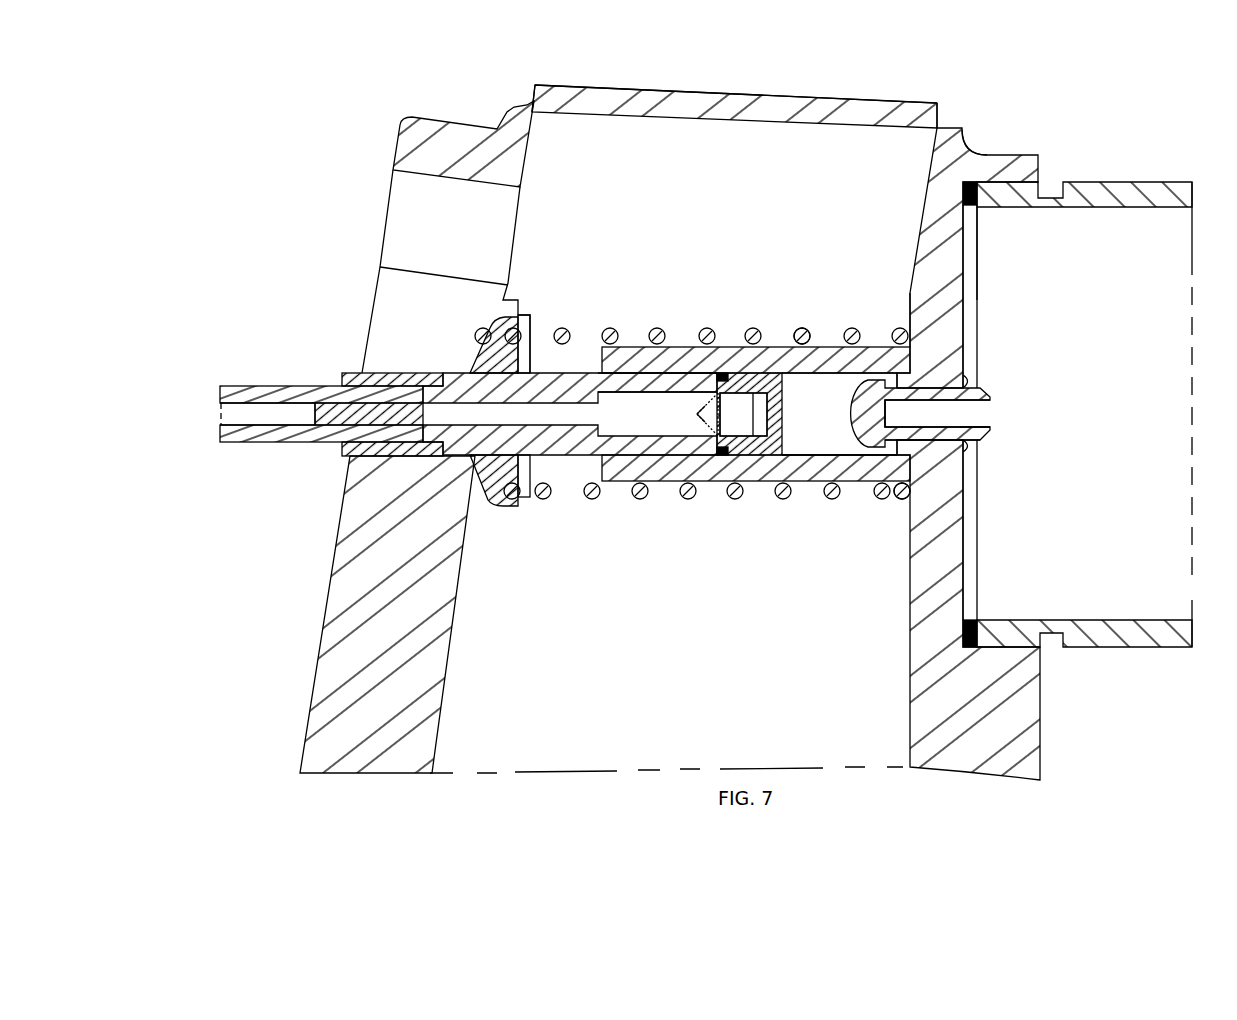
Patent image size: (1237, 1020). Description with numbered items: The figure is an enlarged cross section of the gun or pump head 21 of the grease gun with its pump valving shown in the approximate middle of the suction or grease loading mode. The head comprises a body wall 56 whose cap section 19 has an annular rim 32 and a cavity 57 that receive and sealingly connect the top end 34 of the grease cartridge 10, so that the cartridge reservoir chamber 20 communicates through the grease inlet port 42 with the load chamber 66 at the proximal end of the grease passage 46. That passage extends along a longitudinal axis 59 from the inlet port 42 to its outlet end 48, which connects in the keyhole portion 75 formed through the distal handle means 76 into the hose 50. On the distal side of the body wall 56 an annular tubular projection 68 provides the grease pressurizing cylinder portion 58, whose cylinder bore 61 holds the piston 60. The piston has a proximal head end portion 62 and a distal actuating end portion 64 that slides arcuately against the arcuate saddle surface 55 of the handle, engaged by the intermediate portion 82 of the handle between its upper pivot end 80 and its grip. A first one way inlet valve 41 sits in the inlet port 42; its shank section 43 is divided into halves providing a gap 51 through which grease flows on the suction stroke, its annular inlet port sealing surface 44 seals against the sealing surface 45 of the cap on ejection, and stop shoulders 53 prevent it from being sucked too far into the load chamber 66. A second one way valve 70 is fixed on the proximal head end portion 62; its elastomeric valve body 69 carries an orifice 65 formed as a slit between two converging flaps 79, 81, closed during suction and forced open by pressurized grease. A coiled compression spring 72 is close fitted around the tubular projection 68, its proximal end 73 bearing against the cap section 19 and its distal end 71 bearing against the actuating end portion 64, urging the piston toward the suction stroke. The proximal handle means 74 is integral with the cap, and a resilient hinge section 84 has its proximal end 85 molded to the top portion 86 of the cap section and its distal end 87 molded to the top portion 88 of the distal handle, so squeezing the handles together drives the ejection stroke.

The grease cartridge 10 is at (1138, 179).
The cap section 19 is at (965, 272).
The cartridge reservoir chamber 20 is at (1130, 376).
The gun or pump head 21 is at (648, 86).
The annular rim 32 is at (1040, 170).
The top end of cartridge 34 is at (978, 220).
The first one way inlet valve 41 is at (929, 388).
The grease inlet port 42 is at (975, 410).
The shank section 43 is at (935, 442).
The annular inlet port sealing surface 44 is at (896, 438).
The sealing surface 45 is at (886, 441).
The grease passage 46 is at (453, 410).
The outlet end 48 is at (327, 383).
The hose 50 is at (223, 386).
The gap 51 is at (977, 426).
The stop shoulders 53 is at (968, 376).
The arcuate saddle surface 55 is at (481, 333).
The body wall 56 is at (947, 295).
The cavity 57 is at (1006, 183).
The grease pressurizing cylinder portion 58 is at (875, 347).
The longitudinal axis 59 is at (293, 413).
The piston 60 is at (643, 372).
The cylinder bore 61 is at (807, 449).
The proximal head end portion 62 is at (767, 371).
The distal actuating end portion 64 is at (508, 498).
The orifice 65 is at (698, 409).
The load chamber 66 is at (827, 445).
The annular tubular projection 68 is at (821, 345).
The valve body 69 is at (743, 414).
The second one way valve 70 is at (731, 374).
The distal end of spring 71 is at (522, 300).
The compression spring 72 is at (562, 330).
The proximal end of spring 73 is at (912, 492).
The proximal handle means 74 is at (1040, 720).
The keyhole portion 75 is at (378, 348).
The distal handle means 76 is at (328, 598).
The flap 79 is at (707, 405).
The upper pivot end 80 is at (933, 164).
The flap 81 is at (718, 432).
The intermediate portion 82 is at (368, 311).
The resilient hinge section 84 is at (823, 98).
The proximal end of hinge section 85 is at (940, 111).
The top portion of cap section 86 is at (963, 130).
The distal end of hinge section 87 is at (532, 99).
The top portion of handle means 88 is at (507, 107).